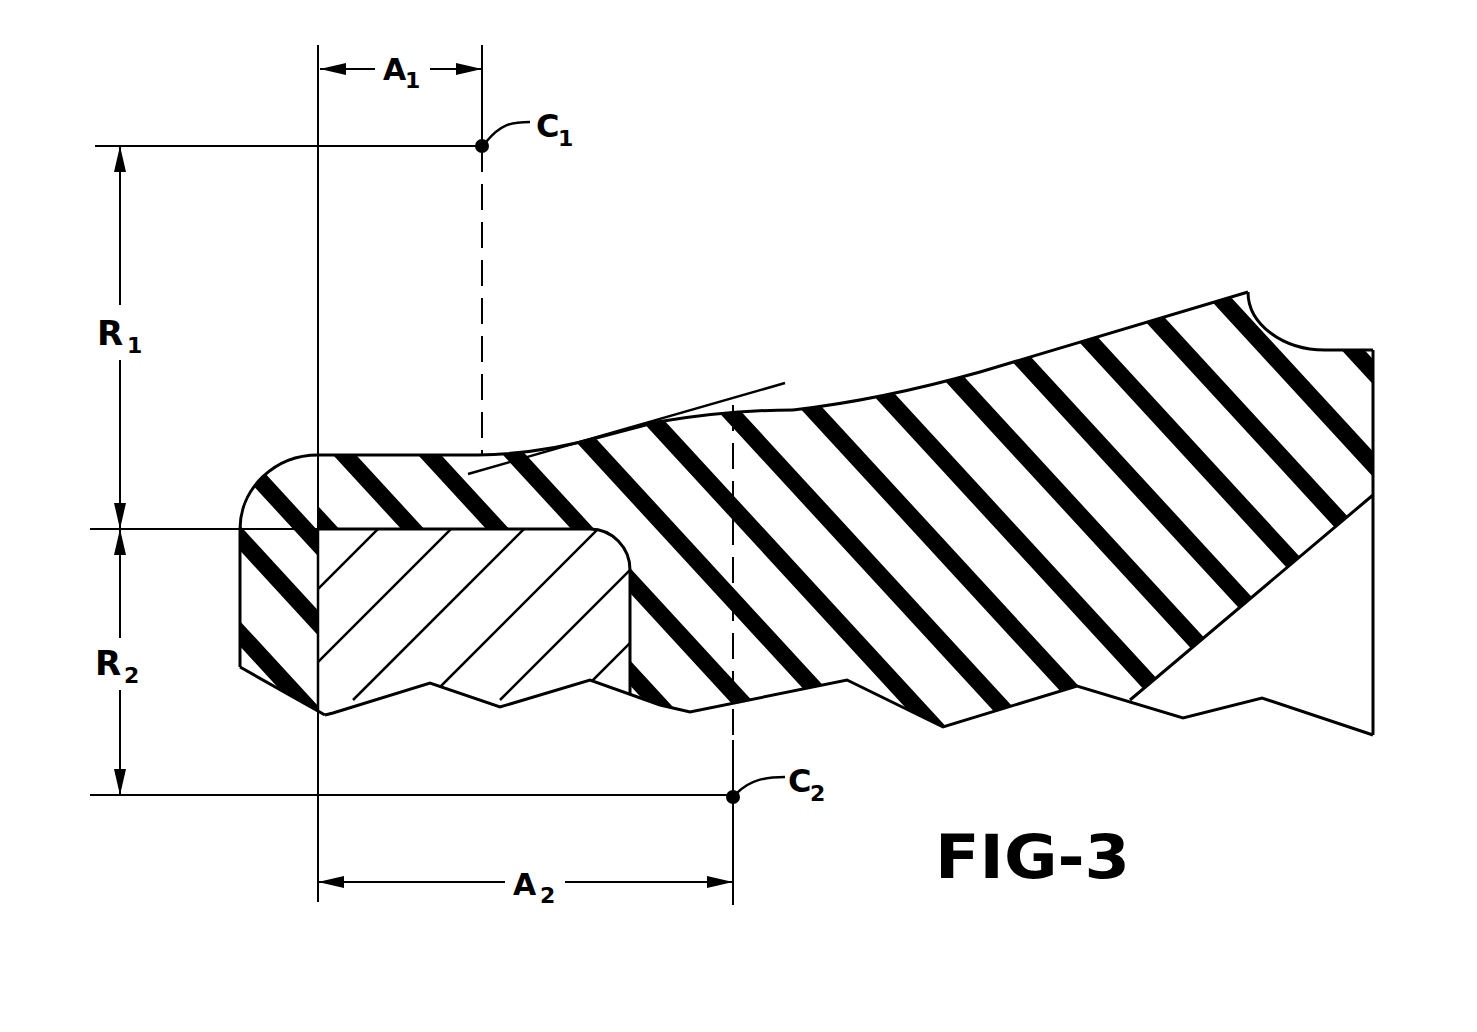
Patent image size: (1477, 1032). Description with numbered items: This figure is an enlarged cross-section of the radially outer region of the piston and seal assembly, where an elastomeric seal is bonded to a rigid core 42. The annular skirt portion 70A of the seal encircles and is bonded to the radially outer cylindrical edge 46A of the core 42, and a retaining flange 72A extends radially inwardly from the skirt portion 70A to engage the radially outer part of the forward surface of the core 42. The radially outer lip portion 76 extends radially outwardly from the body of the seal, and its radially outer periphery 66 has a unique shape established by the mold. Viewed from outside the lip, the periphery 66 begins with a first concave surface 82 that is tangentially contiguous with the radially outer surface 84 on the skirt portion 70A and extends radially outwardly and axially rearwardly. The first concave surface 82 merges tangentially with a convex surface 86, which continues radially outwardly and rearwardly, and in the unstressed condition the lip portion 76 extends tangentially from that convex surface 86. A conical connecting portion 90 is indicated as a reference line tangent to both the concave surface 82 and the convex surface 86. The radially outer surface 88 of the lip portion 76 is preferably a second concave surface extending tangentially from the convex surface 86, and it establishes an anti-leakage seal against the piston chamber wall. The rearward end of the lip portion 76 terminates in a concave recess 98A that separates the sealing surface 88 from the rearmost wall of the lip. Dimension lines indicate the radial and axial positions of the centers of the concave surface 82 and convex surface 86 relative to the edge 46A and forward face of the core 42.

The core 42 is at (473, 677).
The radially outer cylindrical edge 46A is at (388, 568).
The radially outer periphery 66 is at (877, 386).
The annular skirt portion 70A is at (343, 455).
The retaining flange 72A is at (250, 667).
The radially outer lip portion 76 is at (1345, 408).
The first concave surface 82 is at (565, 446).
The radially outer surface 84 is at (450, 452).
The convex surface 86 is at (657, 422).
The radially outer surface 88 is at (987, 368).
The conical connecting portion 90 is at (768, 385).
The concave recess 98A is at (1290, 338).